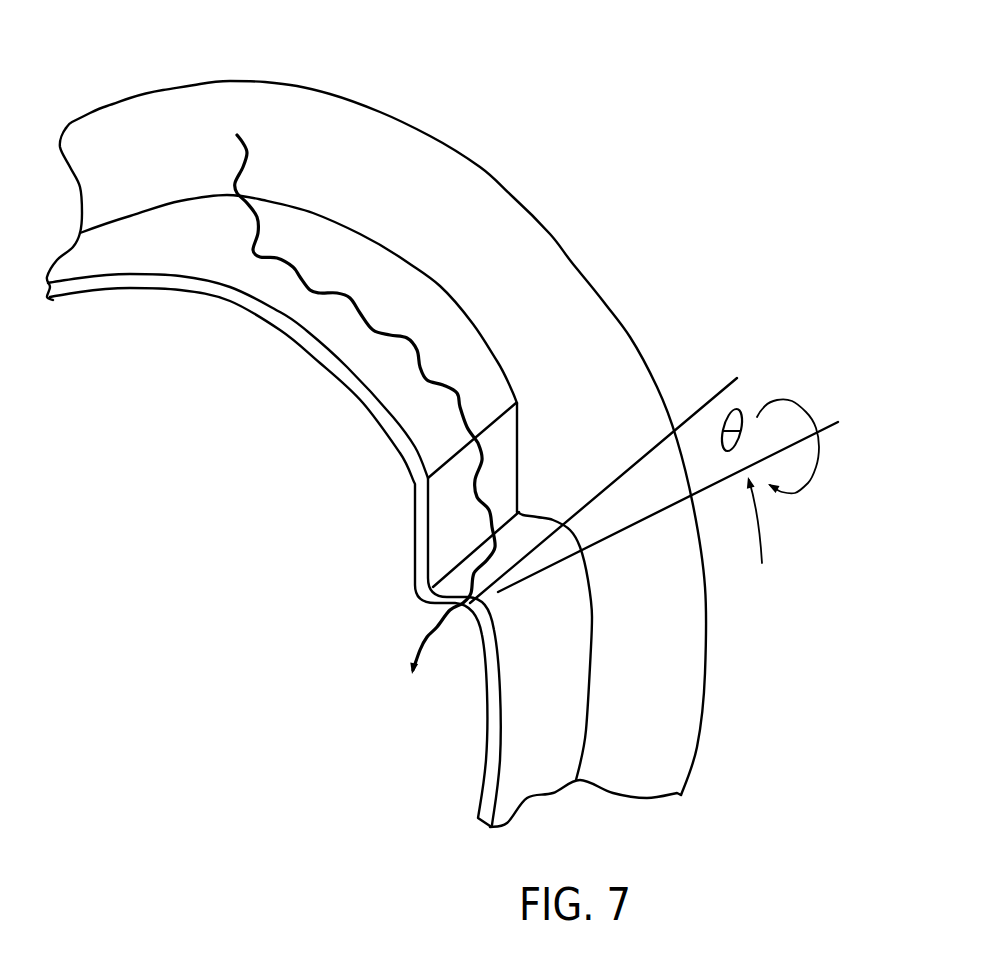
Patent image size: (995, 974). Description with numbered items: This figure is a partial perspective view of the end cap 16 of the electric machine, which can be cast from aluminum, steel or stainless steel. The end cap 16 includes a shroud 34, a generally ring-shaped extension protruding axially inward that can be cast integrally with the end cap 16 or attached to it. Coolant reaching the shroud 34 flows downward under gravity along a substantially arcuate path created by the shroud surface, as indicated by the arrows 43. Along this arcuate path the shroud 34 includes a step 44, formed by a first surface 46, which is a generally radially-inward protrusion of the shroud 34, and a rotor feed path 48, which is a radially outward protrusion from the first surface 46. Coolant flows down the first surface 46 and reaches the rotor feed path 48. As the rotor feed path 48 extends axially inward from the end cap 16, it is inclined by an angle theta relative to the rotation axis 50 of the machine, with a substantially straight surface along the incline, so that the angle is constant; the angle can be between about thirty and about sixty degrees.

The end cap 16 is at (537, 154).
The shroud 34 is at (183, 260).
The arrows 43 is at (247, 153).
The step 44 is at (394, 546).
The first surface 46 is at (500, 453).
The rotor feed path 48 is at (517, 543).
The rotation axis 50 is at (828, 420).